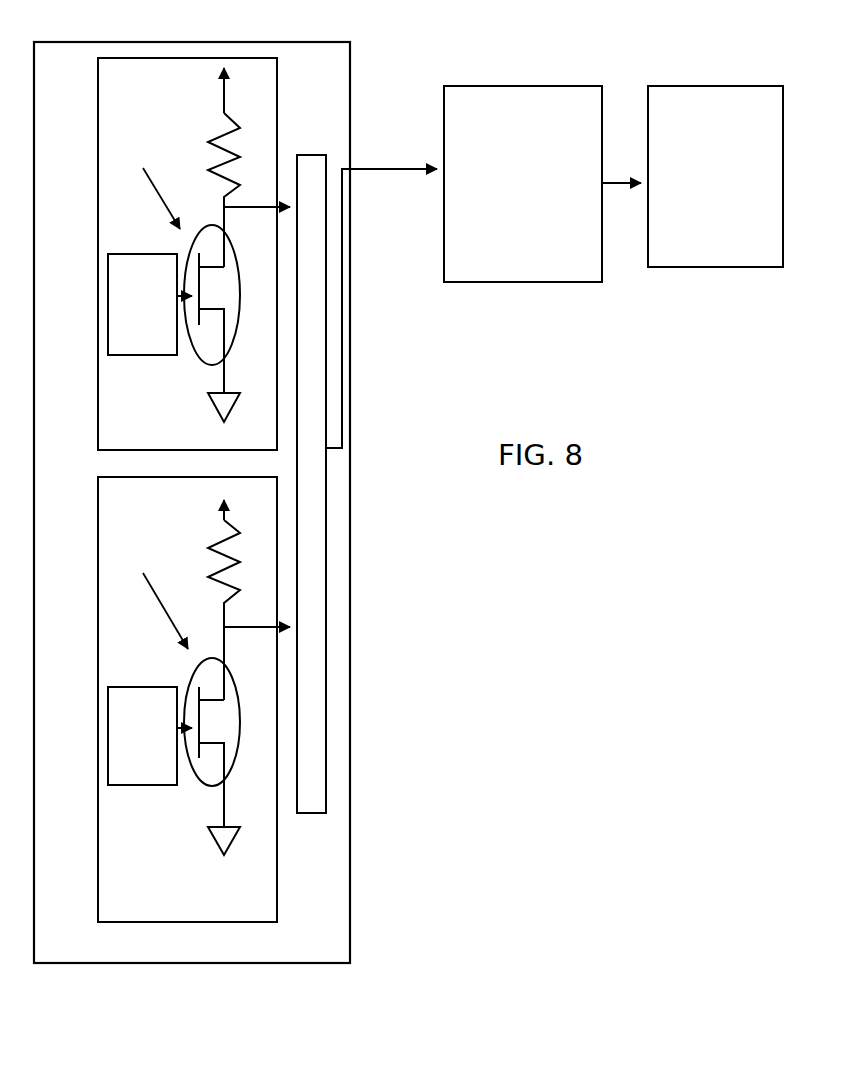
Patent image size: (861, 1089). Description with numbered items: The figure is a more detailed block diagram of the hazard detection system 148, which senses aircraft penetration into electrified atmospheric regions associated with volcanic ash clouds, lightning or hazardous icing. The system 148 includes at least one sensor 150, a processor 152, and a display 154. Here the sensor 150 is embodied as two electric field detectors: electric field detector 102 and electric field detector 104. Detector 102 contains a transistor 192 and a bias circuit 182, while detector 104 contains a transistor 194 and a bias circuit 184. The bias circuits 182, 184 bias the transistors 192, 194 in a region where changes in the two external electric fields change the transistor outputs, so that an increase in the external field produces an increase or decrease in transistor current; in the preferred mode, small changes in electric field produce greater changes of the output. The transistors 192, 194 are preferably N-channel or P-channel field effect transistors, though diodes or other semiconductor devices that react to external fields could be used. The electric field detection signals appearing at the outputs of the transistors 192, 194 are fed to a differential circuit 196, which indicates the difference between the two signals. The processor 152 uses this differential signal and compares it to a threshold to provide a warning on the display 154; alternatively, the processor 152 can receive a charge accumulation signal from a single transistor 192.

The hazard detection system 148 is at (542, 577).
The electric field detector 104 is at (312, 93).
The electric field detector 102 is at (277, 853).
The bias circuit 184 is at (108, 343).
The bias circuit 182 is at (108, 732).
The transistor 194 is at (230, 341).
The transistor 192 is at (240, 717).
The sensor 150 is at (350, 673).
The differential circuit 196 is at (318, 524).
The processor 152 is at (444, 205).
The display 154 is at (648, 236).